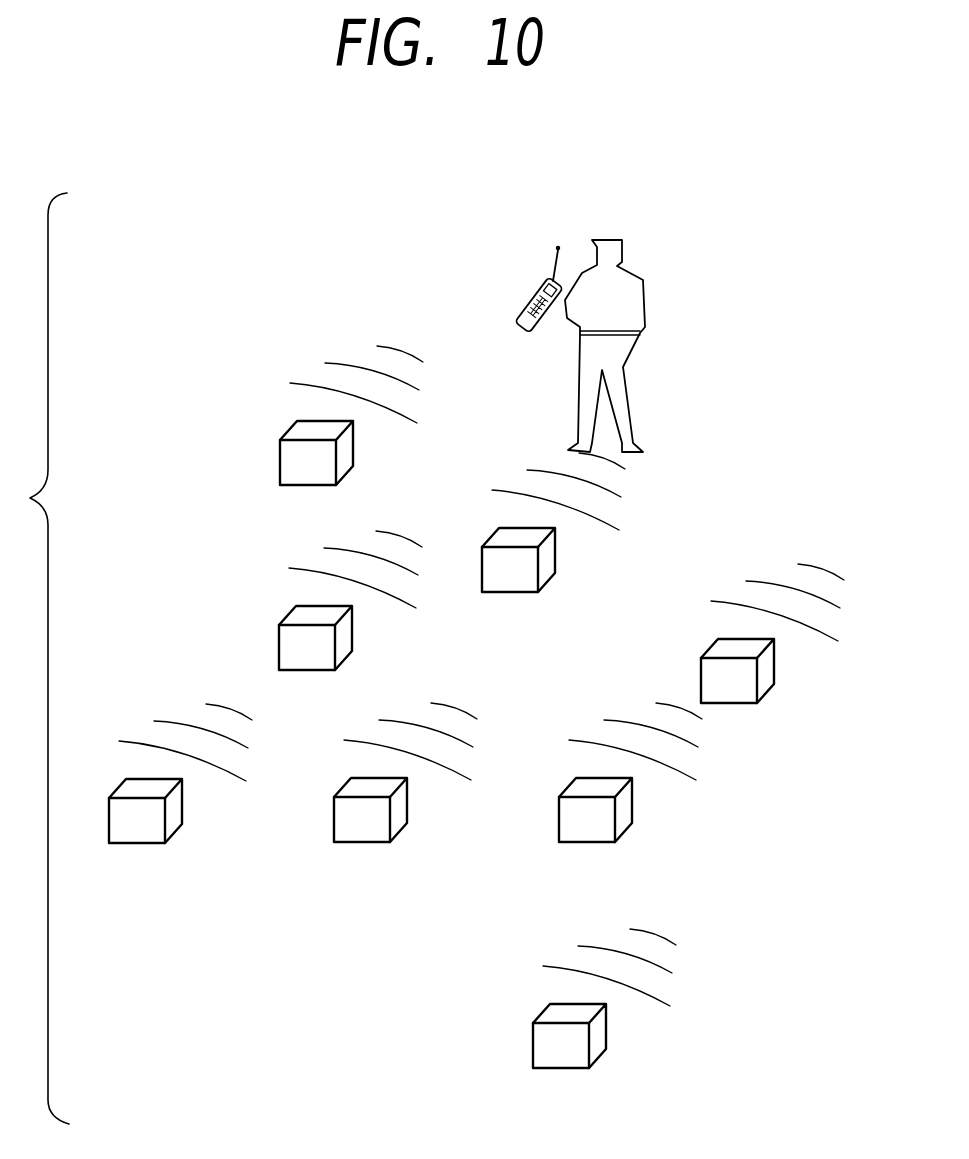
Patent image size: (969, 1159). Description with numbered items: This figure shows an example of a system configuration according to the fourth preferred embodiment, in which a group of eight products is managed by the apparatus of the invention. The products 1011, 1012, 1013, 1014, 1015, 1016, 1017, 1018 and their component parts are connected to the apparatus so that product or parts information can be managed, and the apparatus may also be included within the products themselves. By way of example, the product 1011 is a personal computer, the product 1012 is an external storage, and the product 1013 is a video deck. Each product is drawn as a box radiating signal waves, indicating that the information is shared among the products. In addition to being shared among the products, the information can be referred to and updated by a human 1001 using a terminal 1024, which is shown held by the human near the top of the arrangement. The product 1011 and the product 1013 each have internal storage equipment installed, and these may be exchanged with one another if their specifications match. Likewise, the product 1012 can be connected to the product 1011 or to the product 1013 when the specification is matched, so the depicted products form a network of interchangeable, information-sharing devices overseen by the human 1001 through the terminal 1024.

The human 1001 is at (645, 302).
The terminal 1024 is at (532, 293).
The product 1011 is at (345, 475).
The product 1012 is at (344, 660).
The product 1013 is at (547, 582).
The product 1014 is at (766, 693).
The product 1015 is at (174, 833).
The product 1016 is at (399, 832).
The product 1017 is at (624, 832).
The product 1018 is at (598, 1058).